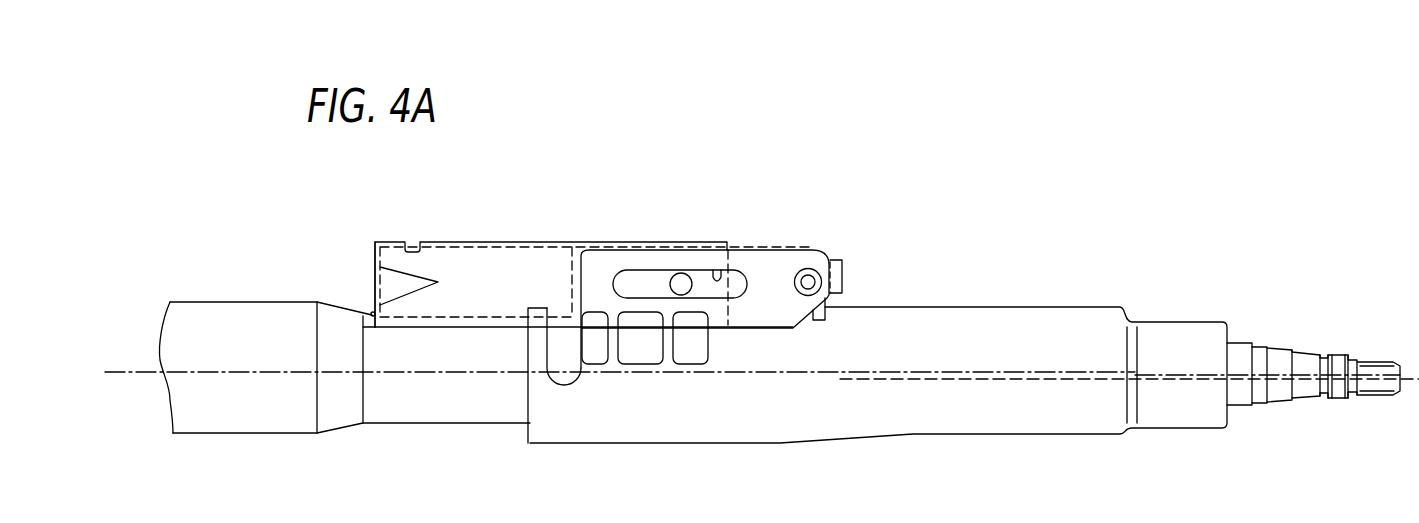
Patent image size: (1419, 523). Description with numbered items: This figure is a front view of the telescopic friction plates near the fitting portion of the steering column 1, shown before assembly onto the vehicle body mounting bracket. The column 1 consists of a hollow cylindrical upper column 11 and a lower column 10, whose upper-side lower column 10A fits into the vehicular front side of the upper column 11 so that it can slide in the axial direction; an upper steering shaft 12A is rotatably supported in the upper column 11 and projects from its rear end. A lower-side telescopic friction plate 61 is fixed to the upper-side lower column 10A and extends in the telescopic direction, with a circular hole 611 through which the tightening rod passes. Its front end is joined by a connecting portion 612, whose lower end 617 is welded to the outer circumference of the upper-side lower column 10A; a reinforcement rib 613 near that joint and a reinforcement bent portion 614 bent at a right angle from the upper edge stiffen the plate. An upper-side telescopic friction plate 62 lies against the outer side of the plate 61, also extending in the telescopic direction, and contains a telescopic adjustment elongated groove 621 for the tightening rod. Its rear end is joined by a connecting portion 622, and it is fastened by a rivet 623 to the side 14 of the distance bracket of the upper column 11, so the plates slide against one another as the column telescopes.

The column 1 is at (972, 272).
The lower column 10 is at (265, 276).
The upper-side lower column 10A is at (198, 323).
The upper column 11 is at (1028, 325).
The upper steering shaft 12A is at (1282, 367).
The side of distance bracket 14 is at (817, 320).
The lower-side telescopic friction plate 61 is at (433, 257).
The circular hole 611 is at (683, 283).
The connecting portion 612 is at (374, 252).
The reinforcement rib 613 is at (393, 282).
The reinforcement bent portion 614 is at (475, 243).
The lower end of connecting portion 617 is at (371, 311).
The upper-side telescopic friction plate 62 is at (765, 258).
The telescopic adjustment elongated groove 621 is at (717, 280).
The connecting portion 622 is at (843, 275).
The rivet 623 is at (807, 269).